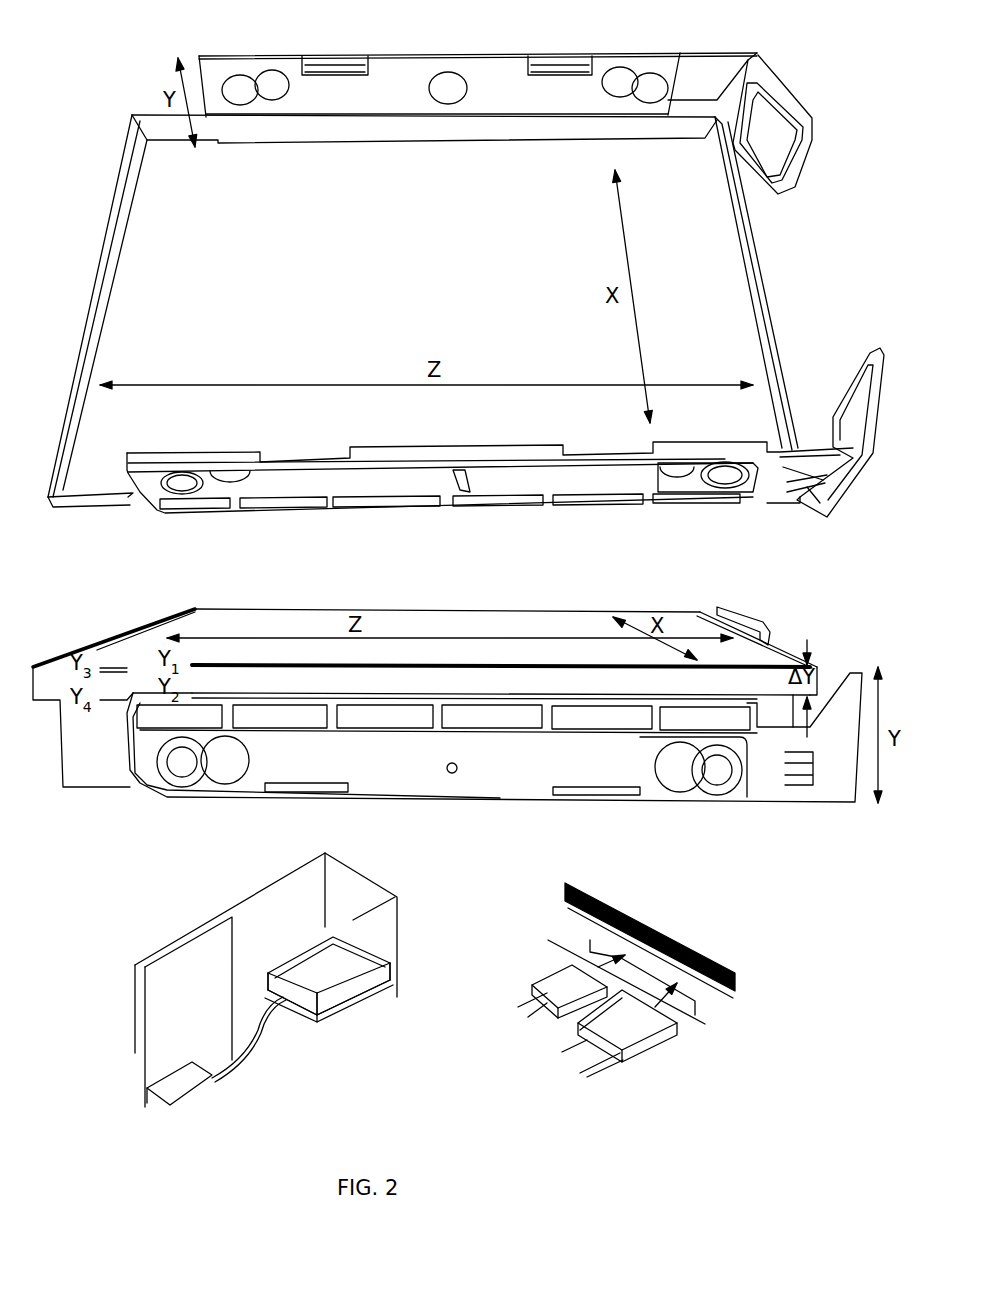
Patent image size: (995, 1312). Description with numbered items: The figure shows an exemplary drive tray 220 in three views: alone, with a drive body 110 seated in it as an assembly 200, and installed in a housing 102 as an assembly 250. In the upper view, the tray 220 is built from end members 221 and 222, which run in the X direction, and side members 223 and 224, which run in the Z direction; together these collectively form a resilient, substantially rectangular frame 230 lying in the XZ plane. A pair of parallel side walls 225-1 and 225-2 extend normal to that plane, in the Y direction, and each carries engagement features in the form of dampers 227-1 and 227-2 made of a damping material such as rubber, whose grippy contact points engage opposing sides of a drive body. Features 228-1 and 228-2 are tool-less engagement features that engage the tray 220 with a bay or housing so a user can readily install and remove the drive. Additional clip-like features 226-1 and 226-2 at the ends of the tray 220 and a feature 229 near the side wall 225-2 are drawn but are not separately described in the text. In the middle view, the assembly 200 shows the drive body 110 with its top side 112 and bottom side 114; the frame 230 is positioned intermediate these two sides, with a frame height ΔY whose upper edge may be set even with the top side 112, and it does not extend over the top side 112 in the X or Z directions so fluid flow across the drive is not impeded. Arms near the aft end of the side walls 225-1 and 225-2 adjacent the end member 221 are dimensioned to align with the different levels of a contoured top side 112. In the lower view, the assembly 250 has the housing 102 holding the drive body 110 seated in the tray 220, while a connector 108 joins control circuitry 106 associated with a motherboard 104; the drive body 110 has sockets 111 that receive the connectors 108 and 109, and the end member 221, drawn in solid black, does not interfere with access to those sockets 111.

The assembly 200 is at (830, 598).
The tray 220 is at (138, 48).
The frame 230 is at (421, 262).
The end member 221 is at (105, 268).
The end member 222 is at (748, 280).
The side member 223 is at (167, 135).
The side member 224 is at (92, 507).
The side wall 225-1 is at (433, 52).
The side wall 225-2 is at (300, 513).
The first retention clip 226-1 is at (778, 193).
The second retention clip 226-2 is at (870, 350).
The damper 227-1 is at (648, 90).
The damper 227-2 is at (660, 467).
The tool-less engagement feature 228-1 is at (327, 730).
The tool-less engagement feature 228-2 is at (657, 463).
The connector opening 229 is at (810, 500).
The drive body 110 is at (160, 632).
The top side 112 is at (498, 610).
The bottom side 114 is at (108, 810).
The assembly 250 is at (108, 940).
The housing 102 is at (193, 930).
The motherboard 104 is at (160, 1010).
The control circuitry 106 is at (165, 1095).
The connector 108 is at (263, 1033).
The connector 109 is at (630, 1058).
The socket 111 is at (703, 1017).